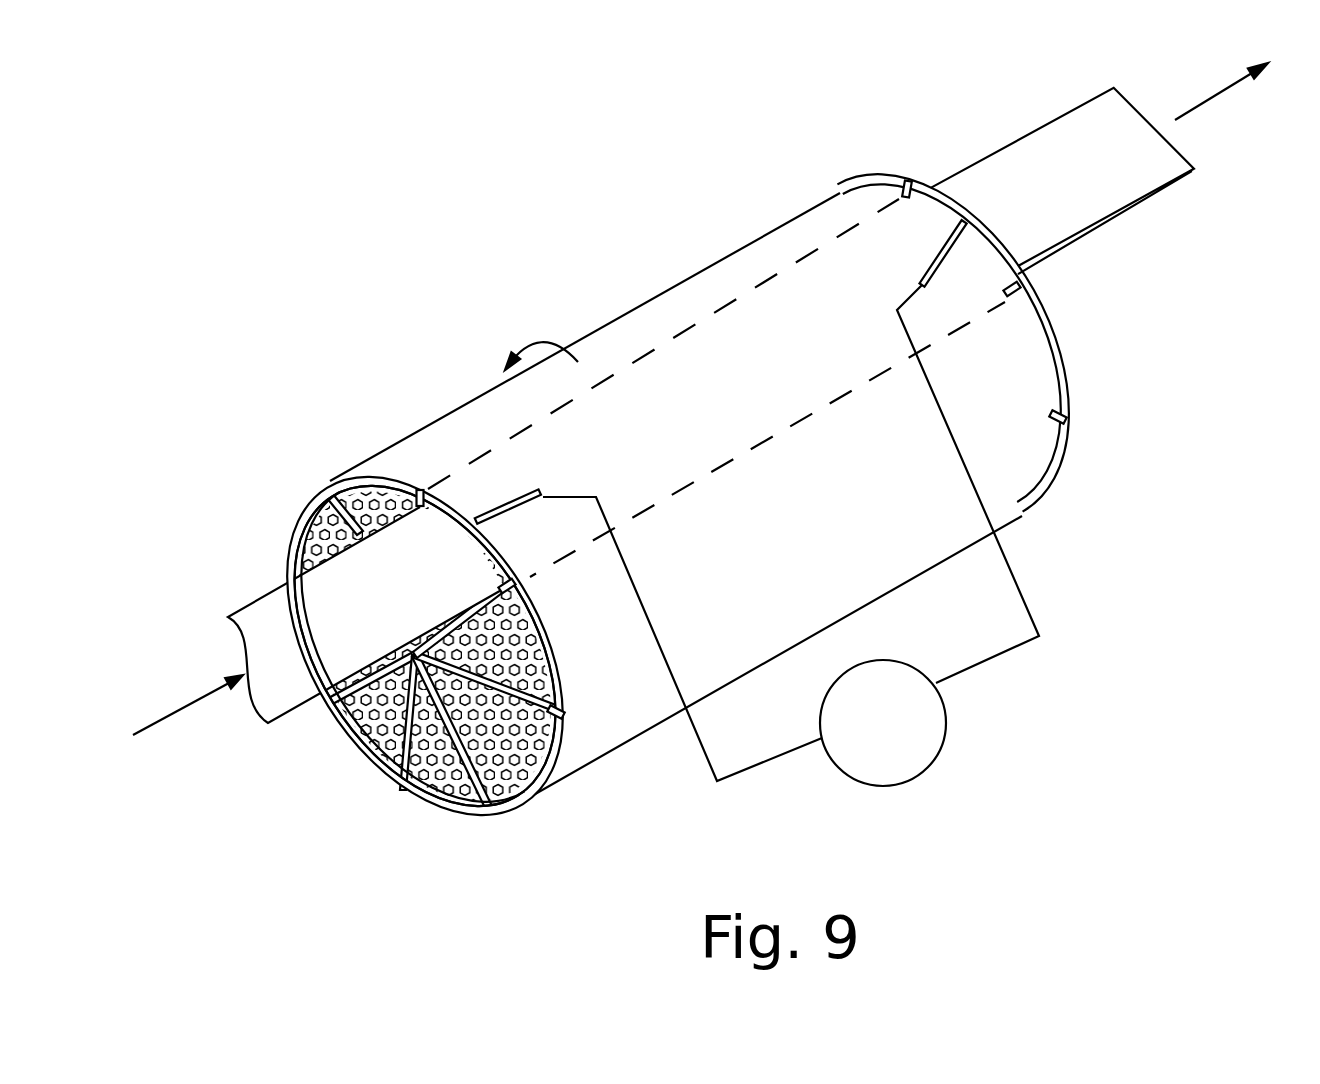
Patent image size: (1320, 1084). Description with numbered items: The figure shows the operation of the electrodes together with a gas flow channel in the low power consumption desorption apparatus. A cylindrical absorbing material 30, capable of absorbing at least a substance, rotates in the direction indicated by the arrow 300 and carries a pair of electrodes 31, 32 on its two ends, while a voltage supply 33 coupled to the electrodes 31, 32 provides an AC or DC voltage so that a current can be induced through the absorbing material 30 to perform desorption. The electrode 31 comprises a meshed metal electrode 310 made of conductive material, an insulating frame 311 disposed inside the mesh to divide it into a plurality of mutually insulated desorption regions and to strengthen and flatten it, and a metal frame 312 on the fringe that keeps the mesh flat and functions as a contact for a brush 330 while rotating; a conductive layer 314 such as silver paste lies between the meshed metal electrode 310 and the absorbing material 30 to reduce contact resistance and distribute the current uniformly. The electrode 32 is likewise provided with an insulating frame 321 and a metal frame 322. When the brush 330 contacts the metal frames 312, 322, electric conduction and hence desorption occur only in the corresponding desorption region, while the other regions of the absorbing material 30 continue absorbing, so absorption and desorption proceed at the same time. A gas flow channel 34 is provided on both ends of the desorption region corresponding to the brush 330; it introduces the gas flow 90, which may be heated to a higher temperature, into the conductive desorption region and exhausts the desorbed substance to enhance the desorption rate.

The absorbing material 30 is at (710, 273).
The rotation direction 300 is at (652, 348).
The electrode 31 is at (434, 631).
The meshed metal electrode 310 is at (302, 546).
The insulating frame 311 is at (419, 490).
The metal frame 312 is at (449, 515).
The conductive layer 314 is at (542, 640).
The electrode 32 is at (976, 302).
The insulating frame 321 is at (910, 182).
The metal frame 322 is at (990, 245).
The voltage supply 33 is at (901, 666).
The brush 330 is at (537, 491).
The gas flow channel 34 is at (258, 626).
The gas flow 90 is at (216, 690).